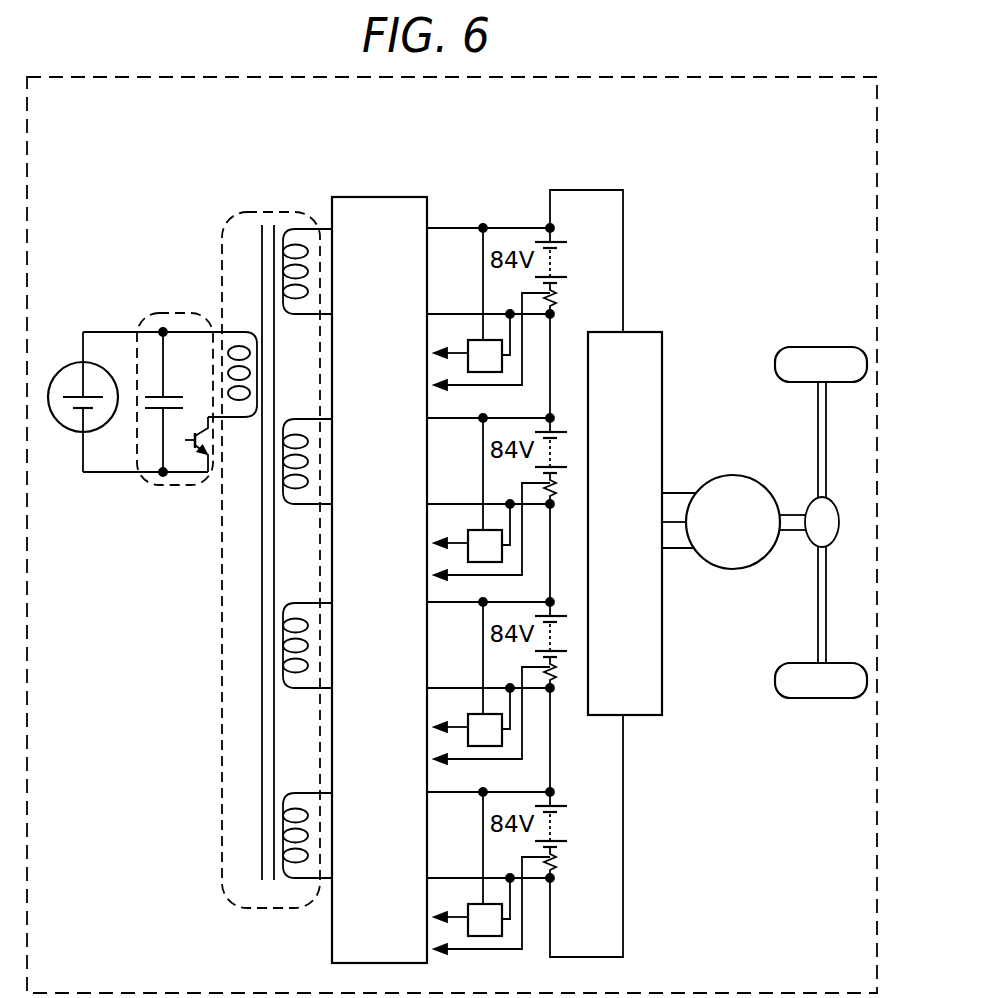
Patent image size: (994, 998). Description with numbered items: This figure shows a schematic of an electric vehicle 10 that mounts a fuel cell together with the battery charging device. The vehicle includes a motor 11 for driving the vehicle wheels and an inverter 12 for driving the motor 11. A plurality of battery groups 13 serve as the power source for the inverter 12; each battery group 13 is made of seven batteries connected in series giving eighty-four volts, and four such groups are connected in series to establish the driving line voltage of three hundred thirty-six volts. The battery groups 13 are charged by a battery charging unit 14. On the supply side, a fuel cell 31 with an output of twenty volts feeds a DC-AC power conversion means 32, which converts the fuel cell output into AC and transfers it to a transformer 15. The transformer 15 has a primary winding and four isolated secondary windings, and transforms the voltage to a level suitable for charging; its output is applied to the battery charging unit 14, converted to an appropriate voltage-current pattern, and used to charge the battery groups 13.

The electric vehicle 10 is at (752, 77).
The motor 11 is at (745, 477).
The inverter 12 is at (665, 355).
The battery groups 13 is at (565, 255).
The battery charging unit 14 is at (397, 197).
The transformer 15 is at (268, 212).
The fuel cell 31 is at (63, 374).
The DC-AC power conversion means 32 is at (163, 313).